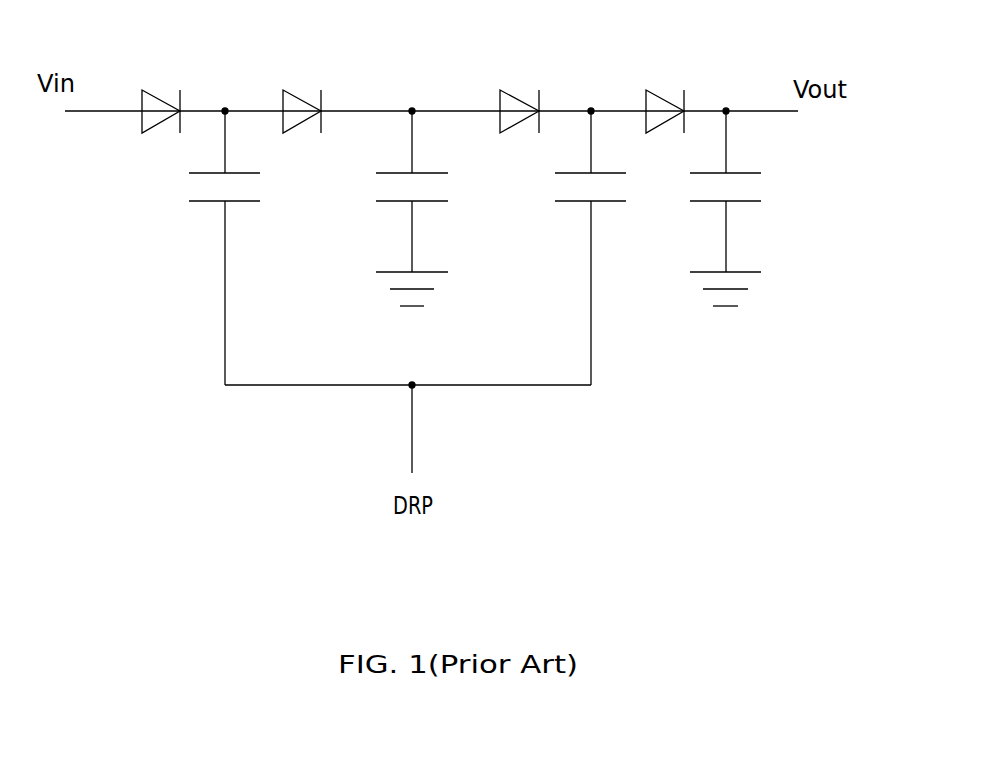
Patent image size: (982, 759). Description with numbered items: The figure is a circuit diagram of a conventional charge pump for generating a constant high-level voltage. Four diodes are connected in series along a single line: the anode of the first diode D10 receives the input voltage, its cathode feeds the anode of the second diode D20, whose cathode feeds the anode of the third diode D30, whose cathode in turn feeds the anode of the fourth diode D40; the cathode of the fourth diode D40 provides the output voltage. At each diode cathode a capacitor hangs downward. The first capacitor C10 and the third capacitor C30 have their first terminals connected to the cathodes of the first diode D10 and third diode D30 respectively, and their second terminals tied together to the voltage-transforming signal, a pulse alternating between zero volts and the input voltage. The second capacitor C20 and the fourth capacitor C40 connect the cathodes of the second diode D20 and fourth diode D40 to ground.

The first diode D10 is at (162, 90).
The second diode D20 is at (329, 90).
The third diode D30 is at (526, 88).
The fourth diode D40 is at (666, 88).
The first capacitor C10 is at (211, 248).
The second capacitor C20 is at (400, 208).
The third capacitor C30 is at (579, 248).
The fourth capacitor C40 is at (714, 208).